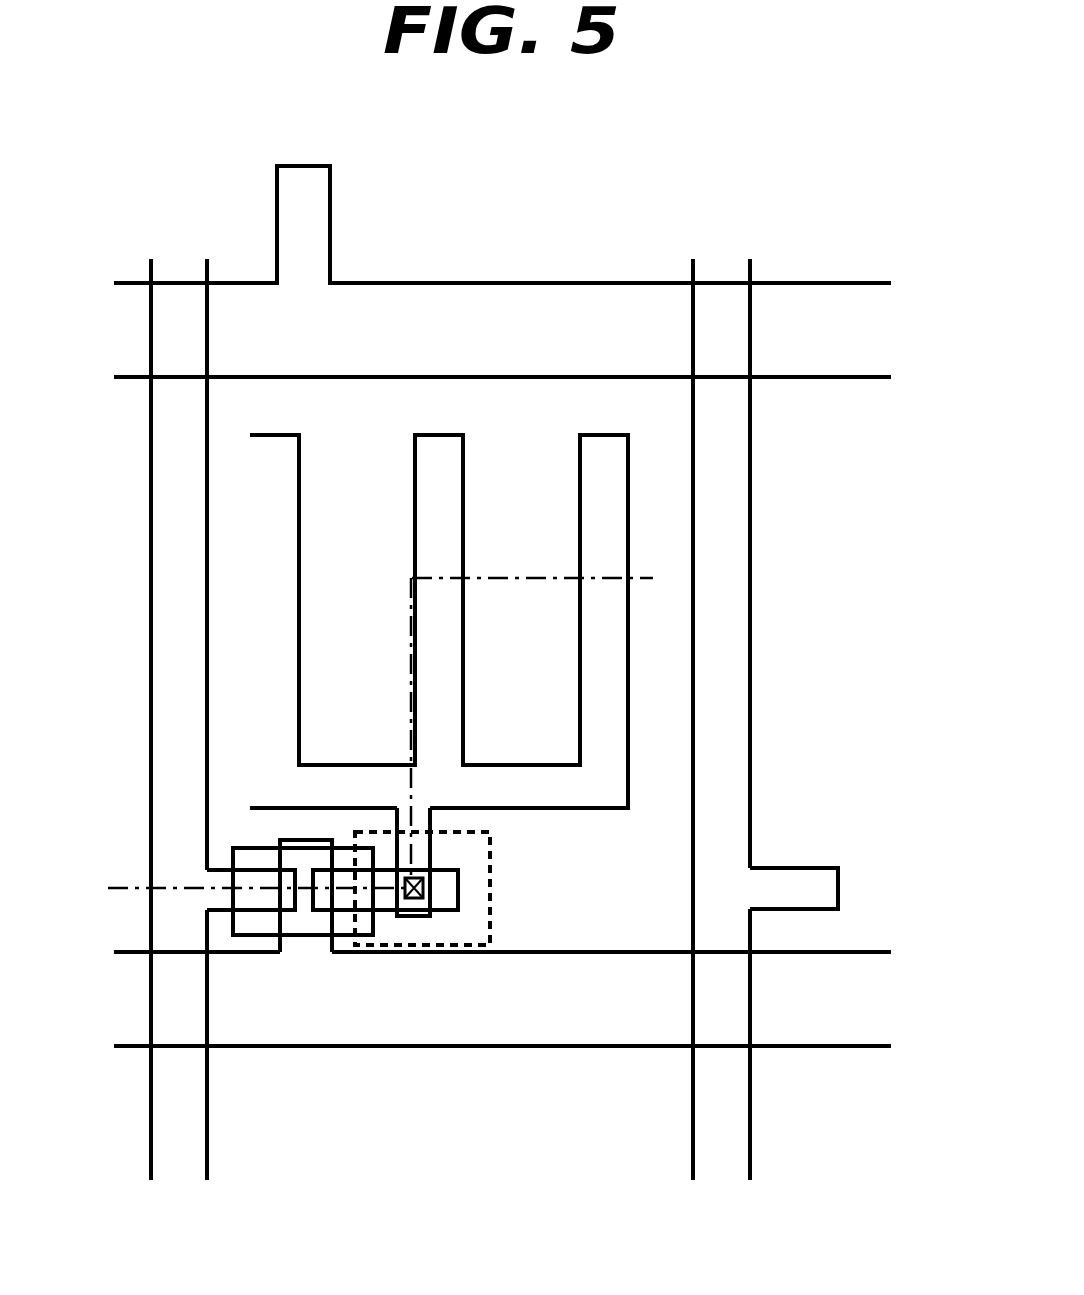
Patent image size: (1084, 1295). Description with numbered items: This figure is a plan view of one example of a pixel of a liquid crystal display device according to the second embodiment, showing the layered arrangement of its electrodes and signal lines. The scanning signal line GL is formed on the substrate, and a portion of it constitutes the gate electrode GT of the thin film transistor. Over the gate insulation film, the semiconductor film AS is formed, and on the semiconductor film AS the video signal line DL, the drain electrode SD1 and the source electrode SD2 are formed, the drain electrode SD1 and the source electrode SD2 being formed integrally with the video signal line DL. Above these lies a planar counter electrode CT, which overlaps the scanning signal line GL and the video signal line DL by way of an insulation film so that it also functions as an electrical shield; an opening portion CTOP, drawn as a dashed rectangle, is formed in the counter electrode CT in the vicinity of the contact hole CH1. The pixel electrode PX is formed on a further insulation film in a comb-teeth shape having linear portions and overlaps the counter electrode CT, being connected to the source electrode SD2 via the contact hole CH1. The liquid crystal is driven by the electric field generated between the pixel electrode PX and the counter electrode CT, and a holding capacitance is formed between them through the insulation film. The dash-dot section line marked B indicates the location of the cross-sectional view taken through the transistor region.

The pixel electrode PX is at (468, 480).
The counter electrode CT is at (640, 917).
The opening portion CTOP is at (492, 890).
The scanning signal line GL is at (515, 1027).
The video signal line DL is at (173, 738).
The gate electrode GT is at (293, 840).
The drain electrode SD1 is at (258, 913).
The source electrode SD2 is at (323, 912).
The semiconductor film AS is at (302, 937).
The contact hole CH1 is at (415, 900).
The section line B- B is at (378, 731).